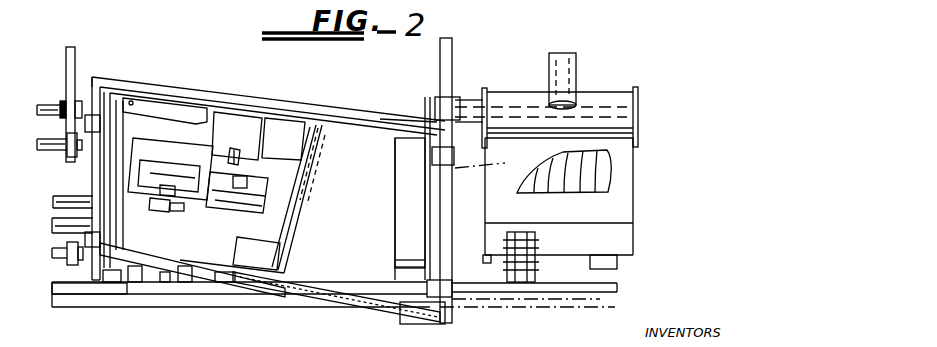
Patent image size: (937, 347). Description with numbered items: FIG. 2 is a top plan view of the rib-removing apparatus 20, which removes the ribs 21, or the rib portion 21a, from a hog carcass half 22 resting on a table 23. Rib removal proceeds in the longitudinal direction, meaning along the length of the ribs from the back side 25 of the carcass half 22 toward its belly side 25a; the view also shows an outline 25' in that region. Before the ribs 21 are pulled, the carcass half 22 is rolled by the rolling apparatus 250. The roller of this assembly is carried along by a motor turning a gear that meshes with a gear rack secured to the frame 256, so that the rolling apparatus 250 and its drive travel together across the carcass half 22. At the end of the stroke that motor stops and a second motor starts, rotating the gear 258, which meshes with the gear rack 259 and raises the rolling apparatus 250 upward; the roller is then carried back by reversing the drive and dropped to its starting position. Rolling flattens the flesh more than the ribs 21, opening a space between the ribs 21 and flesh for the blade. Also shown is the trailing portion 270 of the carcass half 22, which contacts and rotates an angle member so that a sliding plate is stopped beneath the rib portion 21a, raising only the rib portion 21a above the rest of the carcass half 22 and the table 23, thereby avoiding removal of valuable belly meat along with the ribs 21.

The rib-removing apparatus 20 is at (493, 87).
The ribs 21 is at (273, 175).
The rib portion 21a is at (247, 162).
The hog carcass half 22 is at (240, 183).
The table 23 is at (622, 286).
The back side 25 is at (338, 259).
The support member outline 25' is at (302, 166).
The belly side 25a is at (188, 183).
The rolling apparatus 250 is at (141, 80).
The frame 256 is at (312, 107).
The gear 258 is at (184, 200).
The gear rack 259 is at (165, 200).
The trailing portion 270 is at (462, 205).